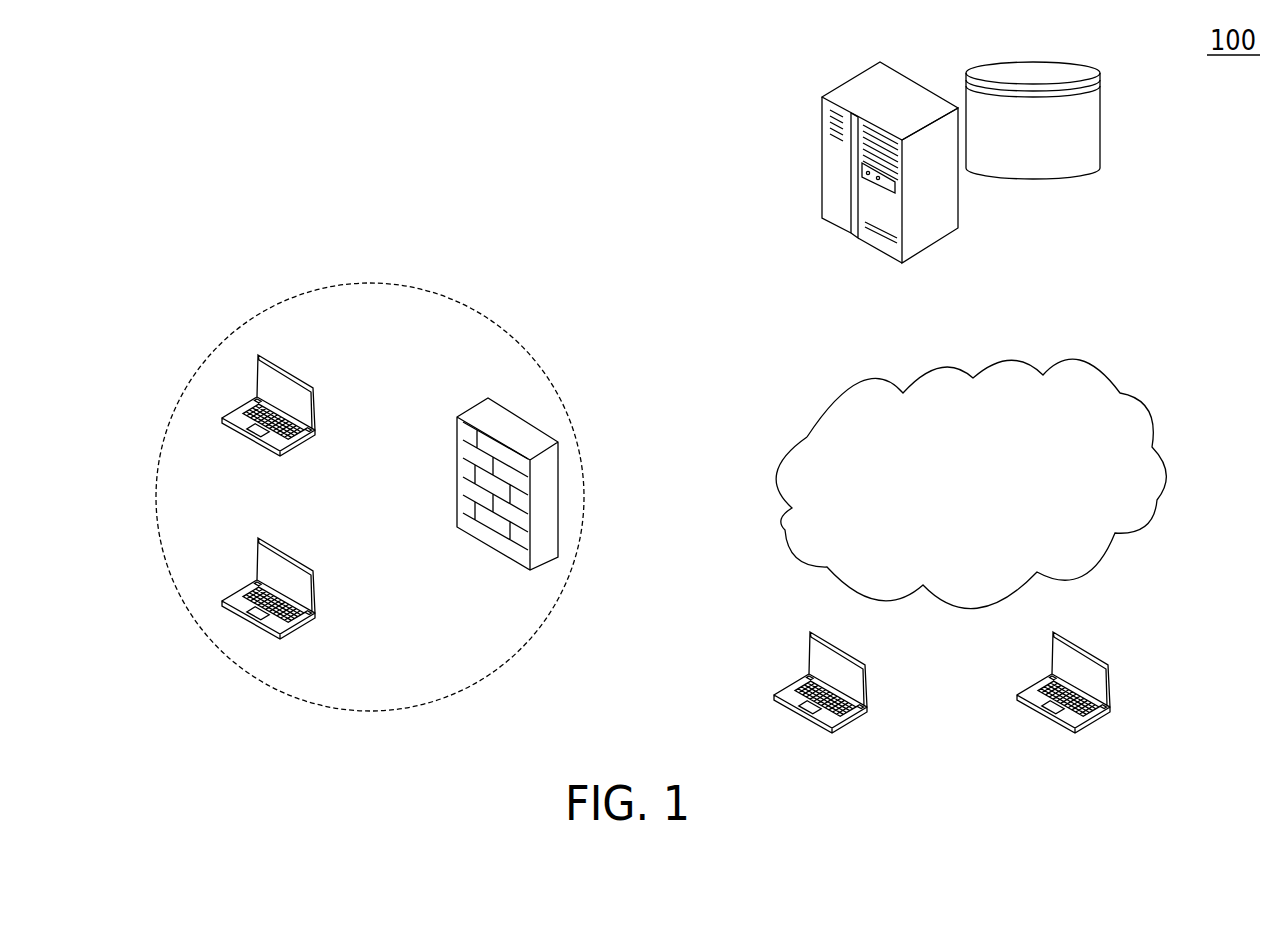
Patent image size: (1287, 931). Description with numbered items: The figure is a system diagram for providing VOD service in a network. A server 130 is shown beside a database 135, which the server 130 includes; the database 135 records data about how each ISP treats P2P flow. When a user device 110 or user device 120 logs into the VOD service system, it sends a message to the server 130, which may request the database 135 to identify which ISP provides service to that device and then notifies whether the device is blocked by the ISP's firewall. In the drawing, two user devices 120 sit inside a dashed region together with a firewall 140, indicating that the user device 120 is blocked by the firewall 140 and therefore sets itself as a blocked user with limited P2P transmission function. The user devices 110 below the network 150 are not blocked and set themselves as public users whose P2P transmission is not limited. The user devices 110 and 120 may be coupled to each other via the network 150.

The user device 110 is at (870, 682).
The user device 120 is at (238, 410).
The server 130 is at (822, 167).
The database 135 is at (1103, 137).
The firewall 140 is at (527, 418).
The network 150 is at (973, 378).